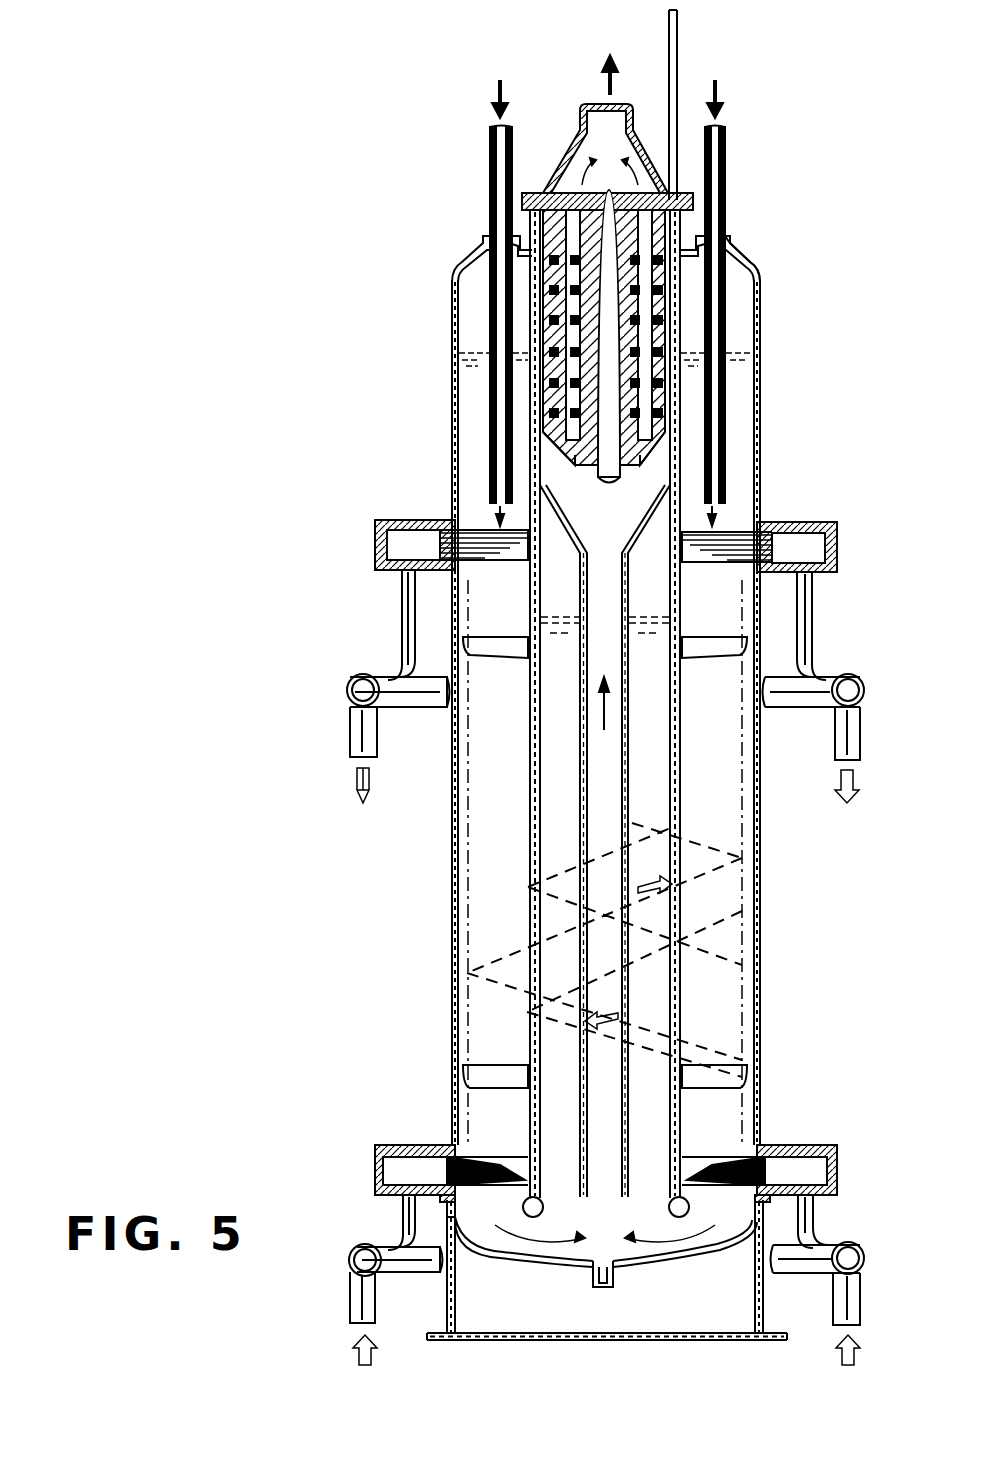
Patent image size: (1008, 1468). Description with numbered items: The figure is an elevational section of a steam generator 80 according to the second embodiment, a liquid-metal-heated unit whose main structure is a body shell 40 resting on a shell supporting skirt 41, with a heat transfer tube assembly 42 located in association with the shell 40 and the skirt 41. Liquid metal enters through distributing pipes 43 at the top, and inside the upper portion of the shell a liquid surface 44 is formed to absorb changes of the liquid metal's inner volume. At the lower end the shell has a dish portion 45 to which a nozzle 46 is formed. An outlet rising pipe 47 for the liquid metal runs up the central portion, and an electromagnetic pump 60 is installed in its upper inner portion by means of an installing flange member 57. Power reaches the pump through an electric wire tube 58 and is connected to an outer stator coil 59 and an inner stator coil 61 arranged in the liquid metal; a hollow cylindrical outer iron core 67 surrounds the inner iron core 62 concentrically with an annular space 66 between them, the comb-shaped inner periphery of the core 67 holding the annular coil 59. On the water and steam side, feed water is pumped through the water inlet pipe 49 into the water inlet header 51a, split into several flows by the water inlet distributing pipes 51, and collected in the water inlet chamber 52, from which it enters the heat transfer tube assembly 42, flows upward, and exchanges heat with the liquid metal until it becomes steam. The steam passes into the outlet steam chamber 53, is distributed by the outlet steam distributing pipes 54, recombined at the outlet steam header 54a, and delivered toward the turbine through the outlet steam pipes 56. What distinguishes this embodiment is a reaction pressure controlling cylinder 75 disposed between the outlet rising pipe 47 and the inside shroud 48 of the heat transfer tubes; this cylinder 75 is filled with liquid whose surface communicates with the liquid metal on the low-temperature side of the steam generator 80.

The body shell 40 is at (760, 897).
The shell supporting skirt 41 is at (763, 1290).
The heat transfer tube assembly 42 is at (735, 1018).
The distributing pipes 43 is at (490, 148).
The liquid surface 44 is at (475, 350).
The dish portion 45 is at (693, 1250).
The nozzle 46 is at (593, 1287).
The outlet rising pipe 47 is at (587, 1097).
The inside shroud 48 is at (598, 337).
The water inlet pipe 49 is at (350, 1290).
The water inlet distributing pipes 51 is at (403, 1215).
The water inlet header 51a is at (350, 1255).
The water inlet chamber 52 is at (400, 1145).
The outlet steam chamber 53 is at (402, 520).
The outlet steam distributing pipes 54 is at (403, 624).
The outlet steam header 54a is at (348, 690).
The outlet steam pipes 56 is at (350, 731).
The installing flange member 57 is at (533, 192).
The electric wire tube 58 is at (677, 28).
The outer stator coil 59 is at (653, 450).
The electromagnetic pump 60 is at (600, 488).
The inner stator coil 61 is at (573, 447).
The inner iron core 62 is at (605, 124).
The annular space 66 is at (647, 308).
The outer iron core 67 is at (663, 330).
The reaction pressure controlling cylinder 75 is at (663, 595).
The steam generator 80 is at (772, 212).